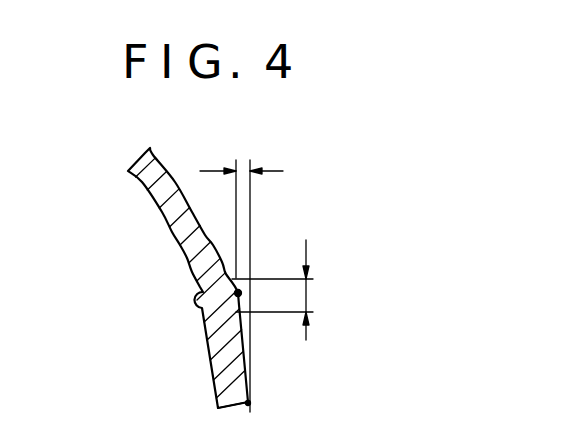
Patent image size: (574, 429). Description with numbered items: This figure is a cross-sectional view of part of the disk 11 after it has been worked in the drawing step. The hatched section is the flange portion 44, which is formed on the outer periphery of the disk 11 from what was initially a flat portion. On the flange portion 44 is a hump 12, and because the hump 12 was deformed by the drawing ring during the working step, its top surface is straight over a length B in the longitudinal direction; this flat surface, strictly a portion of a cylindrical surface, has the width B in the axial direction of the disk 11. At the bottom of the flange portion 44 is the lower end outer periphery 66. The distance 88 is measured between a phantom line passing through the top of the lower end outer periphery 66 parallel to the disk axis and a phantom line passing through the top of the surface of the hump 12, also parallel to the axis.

The disk 11 is at (150, 191).
The flange portion 44 is at (210, 352).
The hump 12 is at (238, 291).
The lower end outer periphery 66 is at (249, 403).
The distance 88 is at (241, 170).
The length B is at (306, 295).